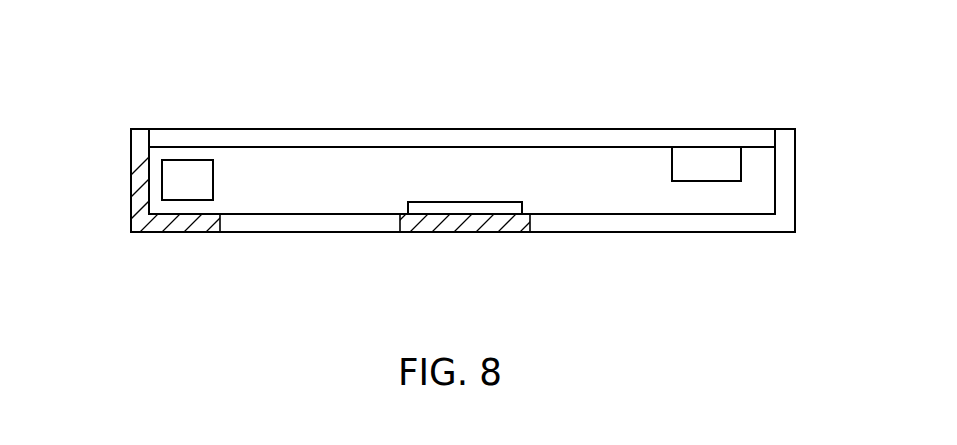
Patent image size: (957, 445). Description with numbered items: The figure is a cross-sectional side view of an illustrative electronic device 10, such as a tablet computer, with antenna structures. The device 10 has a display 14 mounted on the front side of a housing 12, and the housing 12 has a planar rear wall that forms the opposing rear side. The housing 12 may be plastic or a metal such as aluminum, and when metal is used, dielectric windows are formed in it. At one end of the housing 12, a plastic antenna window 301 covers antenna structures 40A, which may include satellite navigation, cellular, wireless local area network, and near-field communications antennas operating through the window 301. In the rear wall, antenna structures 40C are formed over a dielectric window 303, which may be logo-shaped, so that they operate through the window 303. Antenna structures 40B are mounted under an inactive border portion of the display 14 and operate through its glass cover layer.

The electronic device 10 is at (110, 79).
The housing 12 is at (693, 224).
The display 14 is at (582, 135).
The plastic antenna window 301 is at (188, 223).
The dielectric window 303 is at (470, 220).
The antenna structures 40A is at (162, 180).
The antenna structures 40B is at (742, 163).
The antenna structures 40C is at (400, 214).